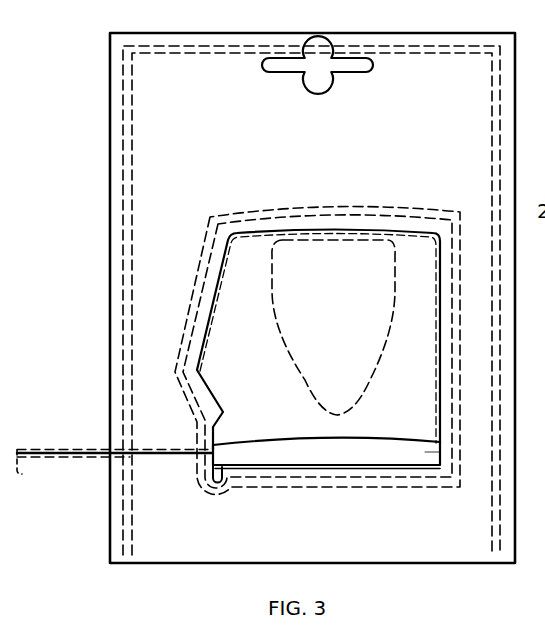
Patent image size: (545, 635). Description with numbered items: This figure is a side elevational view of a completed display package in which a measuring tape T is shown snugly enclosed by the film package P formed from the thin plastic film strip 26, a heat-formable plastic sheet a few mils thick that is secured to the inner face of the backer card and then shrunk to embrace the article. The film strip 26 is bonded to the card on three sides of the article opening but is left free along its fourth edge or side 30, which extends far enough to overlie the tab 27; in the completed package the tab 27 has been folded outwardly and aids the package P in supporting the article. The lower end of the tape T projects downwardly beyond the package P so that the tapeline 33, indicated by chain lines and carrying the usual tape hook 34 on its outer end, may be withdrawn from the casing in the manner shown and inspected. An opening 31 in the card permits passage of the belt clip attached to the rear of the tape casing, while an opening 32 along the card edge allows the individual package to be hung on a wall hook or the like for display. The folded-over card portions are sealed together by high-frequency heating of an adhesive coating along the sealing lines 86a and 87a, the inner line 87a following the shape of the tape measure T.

The thin plastic film strip 26 is at (422, 372).
The tab 27 is at (282, 470).
The fourth edge or side 30 is at (383, 442).
The opening 31 is at (380, 334).
The opening 32 is at (331, 62).
The tapeline 33 is at (97, 453).
The tape hook 34 is at (24, 475).
The sealing line 86a is at (440, 53).
The sealing line 87a is at (372, 204).
The film package P is at (423, 338).
The measuring tape T is at (430, 455).